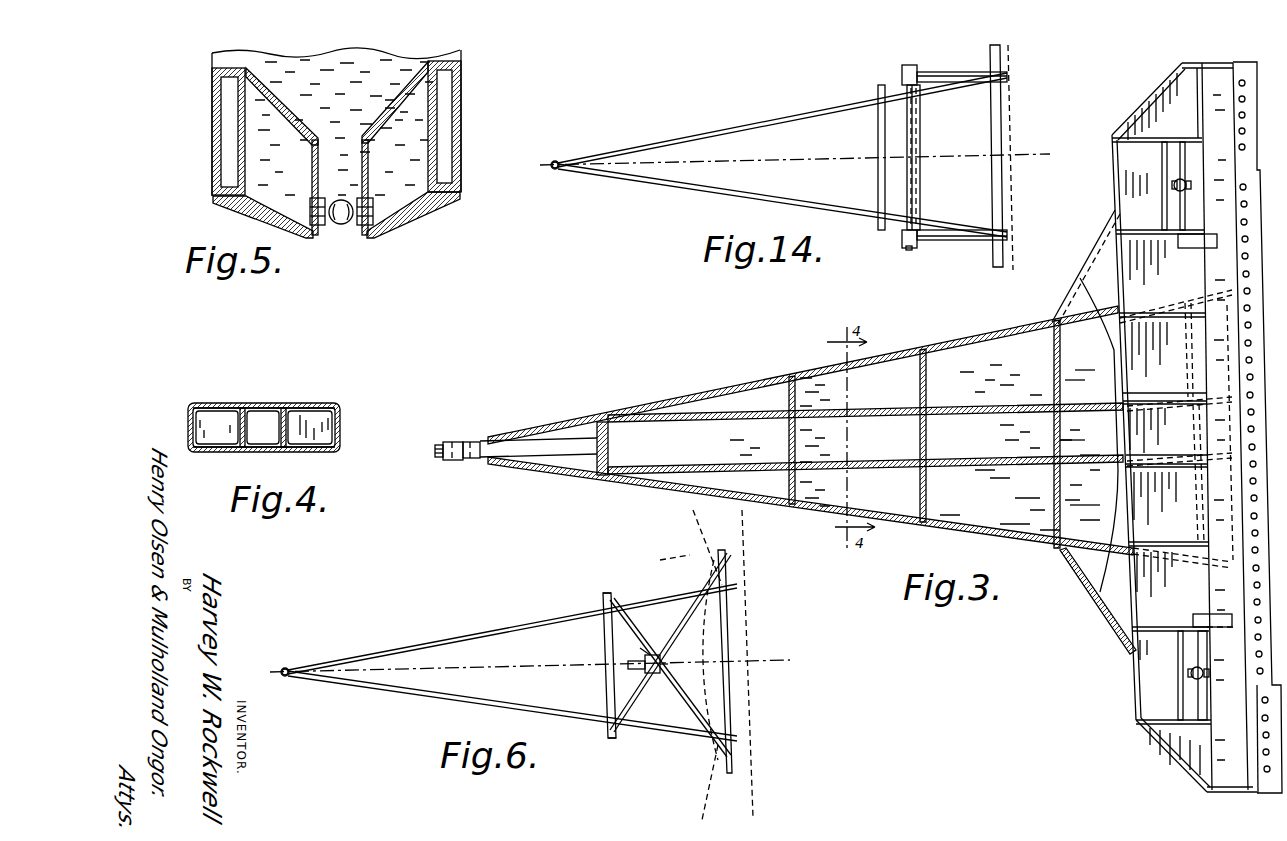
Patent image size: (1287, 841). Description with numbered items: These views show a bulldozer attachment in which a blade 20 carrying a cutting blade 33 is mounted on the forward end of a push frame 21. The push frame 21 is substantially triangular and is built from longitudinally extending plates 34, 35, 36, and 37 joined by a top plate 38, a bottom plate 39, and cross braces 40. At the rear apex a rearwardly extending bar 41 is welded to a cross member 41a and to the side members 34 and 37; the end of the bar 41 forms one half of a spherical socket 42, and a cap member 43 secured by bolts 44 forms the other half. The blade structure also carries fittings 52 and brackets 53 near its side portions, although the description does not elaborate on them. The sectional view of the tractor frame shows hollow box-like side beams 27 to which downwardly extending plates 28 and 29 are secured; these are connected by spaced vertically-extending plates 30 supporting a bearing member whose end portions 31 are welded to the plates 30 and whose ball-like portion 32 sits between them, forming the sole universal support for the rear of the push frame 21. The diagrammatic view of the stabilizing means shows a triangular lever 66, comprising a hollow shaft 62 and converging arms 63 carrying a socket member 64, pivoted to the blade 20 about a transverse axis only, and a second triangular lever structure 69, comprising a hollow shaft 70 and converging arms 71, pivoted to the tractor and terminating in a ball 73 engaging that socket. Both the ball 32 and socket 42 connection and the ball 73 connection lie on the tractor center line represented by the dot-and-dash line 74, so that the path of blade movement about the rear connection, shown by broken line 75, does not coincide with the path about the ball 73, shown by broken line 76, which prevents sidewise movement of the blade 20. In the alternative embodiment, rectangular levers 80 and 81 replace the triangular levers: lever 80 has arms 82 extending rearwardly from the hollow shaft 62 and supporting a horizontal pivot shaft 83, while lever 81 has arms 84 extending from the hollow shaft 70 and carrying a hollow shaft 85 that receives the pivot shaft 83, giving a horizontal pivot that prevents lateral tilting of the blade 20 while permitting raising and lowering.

In FIG. 14, the blade 20 is at (1013, 168).
In FIG. 3, the blade 20 is at (1232, 266).
In FIG. 6, the blade 20 is at (745, 640).
In FIG. 14, the push frame 21 is at (703, 125).
In FIG. 3, the push frame 21 is at (823, 516).
In FIG. 6, the push frame 21 is at (519, 624).
In FIG. 5, the side beams 27 is at (212, 105).
In FIG. 5, the downwardly extending plate 28 is at (272, 213).
In FIG. 5, the downwardly extending plate 29 is at (288, 112).
In FIG. 5, the vertically-extending plates 30 is at (312, 160).
In FIG. 5, the end portions 31 is at (308, 204).
In FIG. 5, the ball-like portion 32 is at (340, 226).
In FIG. 14, the ball-like portion 32 is at (558, 160).
In FIG. 6, the ball-like portion 32 is at (288, 667).
In FIG. 3, the cutting blade 33 is at (1250, 62).
In FIG. 3, the longitudinally extending plate 34 is at (902, 350).
In FIG. 4, the longitudinally extending plate 34 is at (188, 428).
In FIG. 3, the longitudinally extending plate 35 is at (863, 413).
In FIG. 4, the longitudinally extending plate 35 is at (240, 425).
In FIG. 3, the longitudinally extending plate 36 is at (863, 465).
In FIG. 4, the longitudinally extending plate 36 is at (281, 425).
In FIG. 3, the longitudinally extending plate 37 is at (866, 516).
In FIG. 4, the longitudinally extending plate 37 is at (340, 427).
In FIG. 3, the top plate 38 is at (1095, 277).
In FIG. 4, the top plate 38 is at (293, 403).
In FIG. 3, the bottom plate 39 is at (950, 500).
In FIG. 4, the bottom plate 39 is at (305, 452).
In FIG. 3, the cross braces 40 is at (789, 393).
In FIG. 4, the cross braces 40 is at (320, 420).
In FIG. 3, the rearwardly extending bar 41 is at (530, 448).
In FIG. 3, the cross member 41a is at (608, 425).
In FIG. 14, the socket 42 is at (555, 165).
In FIG. 3, the socket 42 is at (475, 442).
In FIG. 6, the socket 42 is at (285, 672).
In FIG. 3, the cap member 43 is at (448, 440).
In FIG. 3, the bolts 44 is at (436, 452).
In FIG. 3, the bolt 52 is at (1180, 192).
In FIG. 3, the bracket 53 is at (1188, 153).
In FIG. 14, the hollow shaft 62 is at (995, 108).
In FIG. 6, the hollow shaft 62 is at (725, 602).
In FIG. 6, the converging arms 63 is at (657, 610).
In FIG. 6, the socket member 64 is at (662, 665).
In FIG. 6, the triangular lever 66 is at (718, 642).
In FIG. 6, the second triangular lever structure 69 is at (618, 647).
In FIG. 14, the hollow shaft 70 is at (878, 115).
In FIG. 6, the hollow shaft 70 is at (603, 637).
In FIG. 6, the converging arms 71 is at (620, 607).
In FIG. 6, the ball 73 is at (650, 655).
In FIG. 14, the dot-and-dash line 74 is at (765, 162).
In FIG. 6, the dot-and-dash line 74 is at (525, 665).
In FIG. 6, the broken line 75 is at (700, 530).
In FIG. 6, the broken line 76 is at (668, 592).
In FIG. 14, the rectangular lever 80 is at (943, 65).
In FIG. 14, the rectangular lever 81 is at (892, 80).
In FIG. 14, the arms 82 is at (950, 82).
In FIG. 14, the pivot shaft 83 is at (915, 250).
In FIG. 14, the arms 84 is at (903, 65).
In FIG. 14, the hollow shaft 85 is at (920, 148).